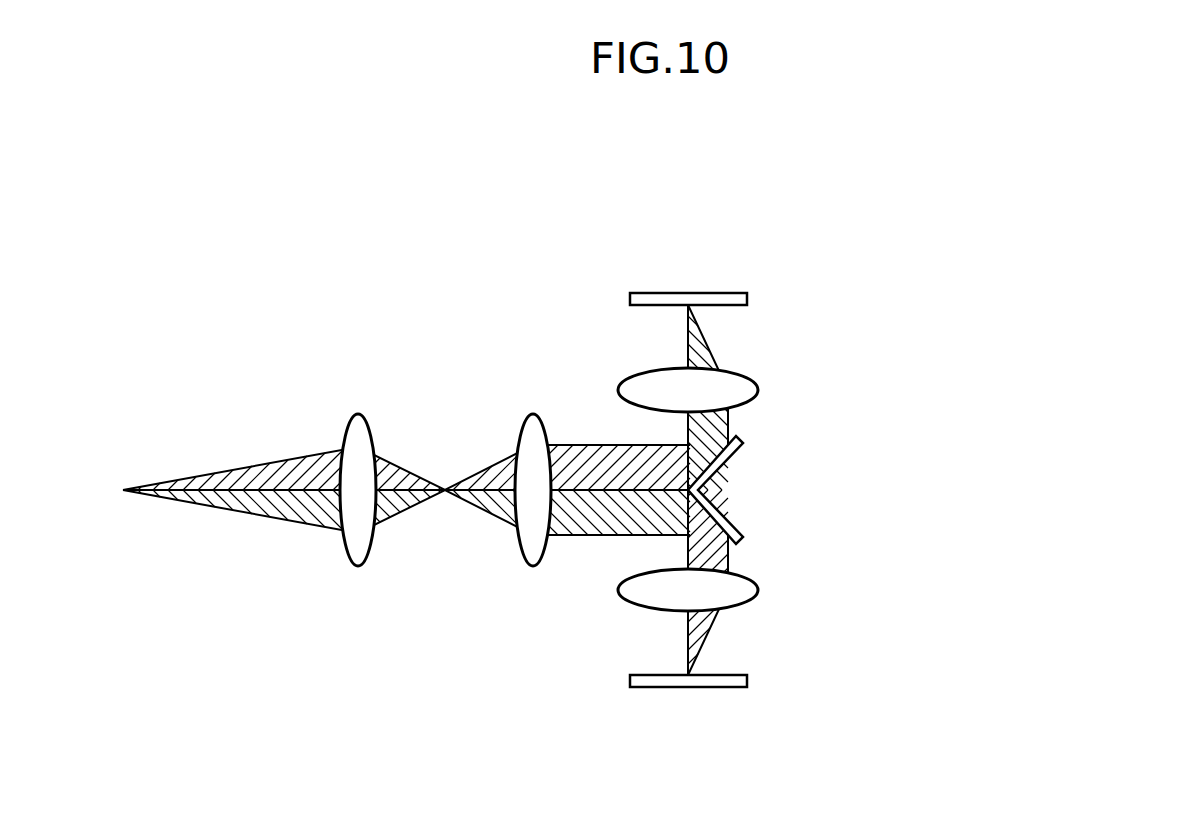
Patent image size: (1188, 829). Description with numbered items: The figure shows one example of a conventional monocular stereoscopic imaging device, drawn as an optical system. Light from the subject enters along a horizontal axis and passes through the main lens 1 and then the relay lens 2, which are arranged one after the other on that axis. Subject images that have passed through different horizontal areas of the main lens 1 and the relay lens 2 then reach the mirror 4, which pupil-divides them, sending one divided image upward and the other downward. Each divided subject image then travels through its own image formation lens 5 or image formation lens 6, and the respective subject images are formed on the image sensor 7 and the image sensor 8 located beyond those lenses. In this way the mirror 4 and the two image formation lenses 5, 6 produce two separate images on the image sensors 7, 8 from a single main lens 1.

The main lens 1 is at (358, 553).
The relay lens 2 is at (533, 553).
The mirror 4 is at (733, 460).
The image formation lens 5 is at (729, 376).
The image formation lens 6 is at (729, 596).
The image sensor 7 is at (712, 298).
The image sensor 8 is at (712, 684).